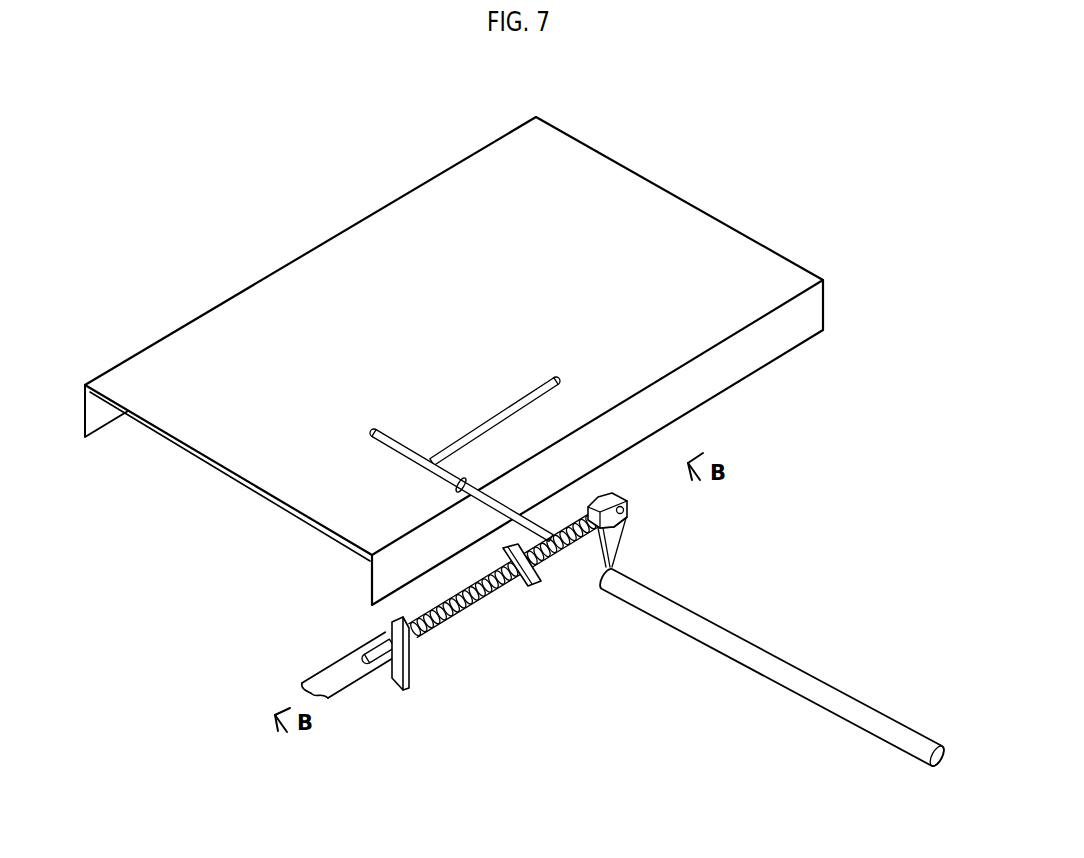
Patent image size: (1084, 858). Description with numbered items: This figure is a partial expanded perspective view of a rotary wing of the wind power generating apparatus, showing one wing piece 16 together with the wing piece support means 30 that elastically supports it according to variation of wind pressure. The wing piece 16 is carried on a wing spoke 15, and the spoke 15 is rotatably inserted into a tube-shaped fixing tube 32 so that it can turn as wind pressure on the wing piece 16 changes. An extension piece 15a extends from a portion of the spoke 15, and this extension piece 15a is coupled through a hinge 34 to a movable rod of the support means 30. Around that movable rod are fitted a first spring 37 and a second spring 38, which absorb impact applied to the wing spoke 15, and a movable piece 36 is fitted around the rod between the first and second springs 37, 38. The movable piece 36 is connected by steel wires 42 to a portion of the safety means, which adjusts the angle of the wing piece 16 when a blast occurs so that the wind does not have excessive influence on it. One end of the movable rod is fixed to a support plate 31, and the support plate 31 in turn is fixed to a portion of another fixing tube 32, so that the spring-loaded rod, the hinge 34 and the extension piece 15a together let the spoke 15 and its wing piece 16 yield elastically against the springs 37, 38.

The wing spoke 15 is at (512, 503).
The extension piece 15a is at (622, 529).
The wing piece 16 is at (228, 298).
The wing piece support means 30 is at (816, 368).
The support plate 31 is at (405, 690).
The fixing tube 32 is at (735, 633).
The hinge 34 is at (630, 510).
The movable piece 36 is at (543, 568).
The first spring 37 is at (566, 560).
The second spring 38 is at (470, 612).
The steel wires 42 is at (412, 645).